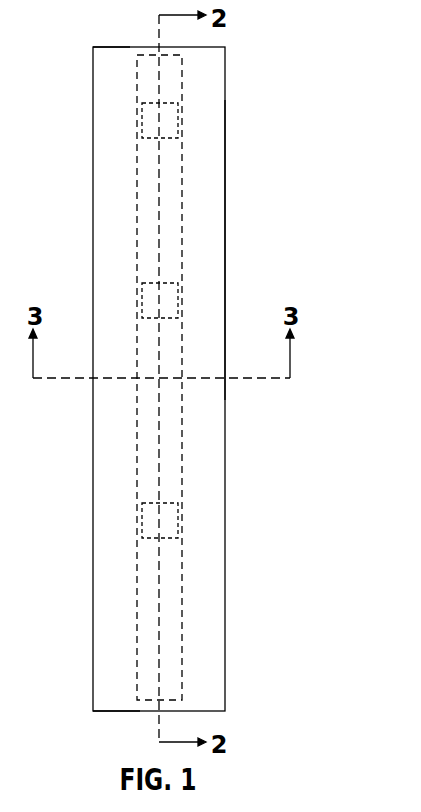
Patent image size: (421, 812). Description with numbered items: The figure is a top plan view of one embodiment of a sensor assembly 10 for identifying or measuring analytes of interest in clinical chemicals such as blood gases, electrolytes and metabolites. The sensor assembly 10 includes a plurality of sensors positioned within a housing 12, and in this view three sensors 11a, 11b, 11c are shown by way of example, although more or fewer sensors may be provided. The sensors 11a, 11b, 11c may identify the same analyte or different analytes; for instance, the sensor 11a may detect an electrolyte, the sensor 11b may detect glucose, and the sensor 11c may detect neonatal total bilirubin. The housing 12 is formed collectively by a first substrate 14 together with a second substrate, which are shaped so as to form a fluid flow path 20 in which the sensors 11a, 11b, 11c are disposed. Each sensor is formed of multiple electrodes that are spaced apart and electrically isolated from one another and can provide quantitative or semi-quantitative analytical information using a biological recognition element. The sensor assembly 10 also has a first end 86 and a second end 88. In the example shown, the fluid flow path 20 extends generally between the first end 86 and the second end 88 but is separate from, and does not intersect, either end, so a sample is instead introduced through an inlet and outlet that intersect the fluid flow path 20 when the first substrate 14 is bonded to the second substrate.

The sensor assembly 10 is at (297, 23).
The housing 12 is at (225, 647).
The first substrate 14 is at (217, 207).
The fluid flow path 20 is at (148, 58).
The first end 86 is at (107, 47).
The second end 88 is at (125, 712).
The sensor 11a is at (186, 128).
The sensor 11b is at (186, 298).
The sensor 11c is at (186, 515).